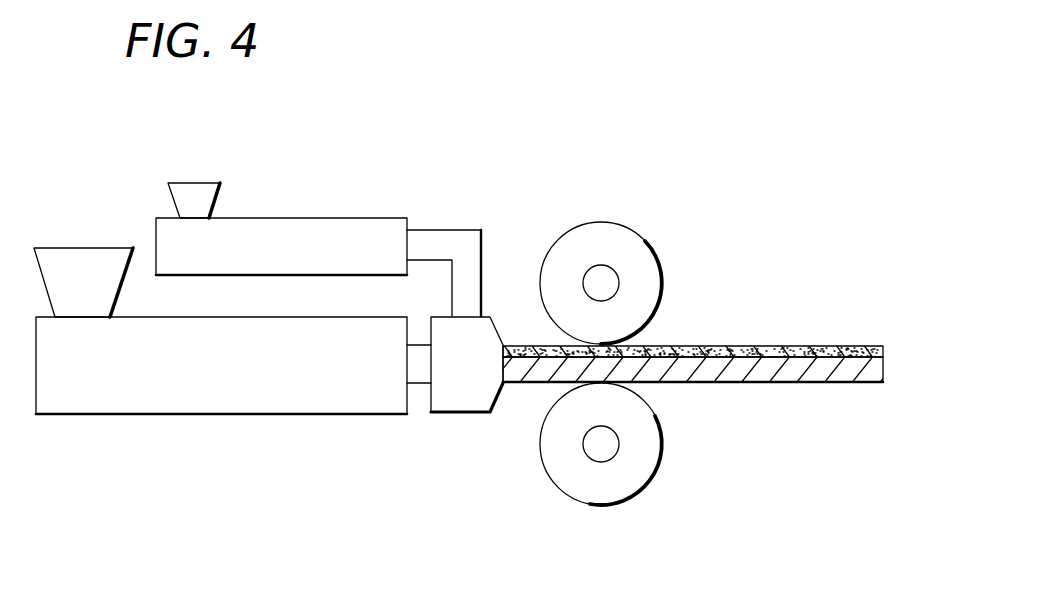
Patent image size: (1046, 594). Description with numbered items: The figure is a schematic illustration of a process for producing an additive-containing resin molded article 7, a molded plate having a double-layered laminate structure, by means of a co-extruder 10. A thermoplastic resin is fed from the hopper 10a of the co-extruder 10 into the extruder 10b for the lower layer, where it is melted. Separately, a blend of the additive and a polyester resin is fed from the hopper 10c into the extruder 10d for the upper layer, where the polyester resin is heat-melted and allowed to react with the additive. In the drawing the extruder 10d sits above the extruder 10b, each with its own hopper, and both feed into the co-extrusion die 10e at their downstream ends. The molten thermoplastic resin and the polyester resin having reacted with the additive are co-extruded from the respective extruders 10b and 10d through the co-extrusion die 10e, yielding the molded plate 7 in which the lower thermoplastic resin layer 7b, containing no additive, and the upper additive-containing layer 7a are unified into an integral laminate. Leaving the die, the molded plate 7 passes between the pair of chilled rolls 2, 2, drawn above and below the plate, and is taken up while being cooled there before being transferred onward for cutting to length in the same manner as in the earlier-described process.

The co-extruder 10 is at (228, 458).
The hopper 10a is at (80, 248).
The extruder for lower layer 10b is at (130, 414).
The hopper 10c is at (195, 183).
The extruder for upper layer 10d is at (314, 218).
The co-extrusion die 10e is at (465, 412).
The chilled rolls 2 is at (603, 222).
The additive-containing resin molded article 7 is at (800, 325).
The additive-containing layer 7a is at (717, 347).
The thermoplastic resin layer 7b is at (757, 382).